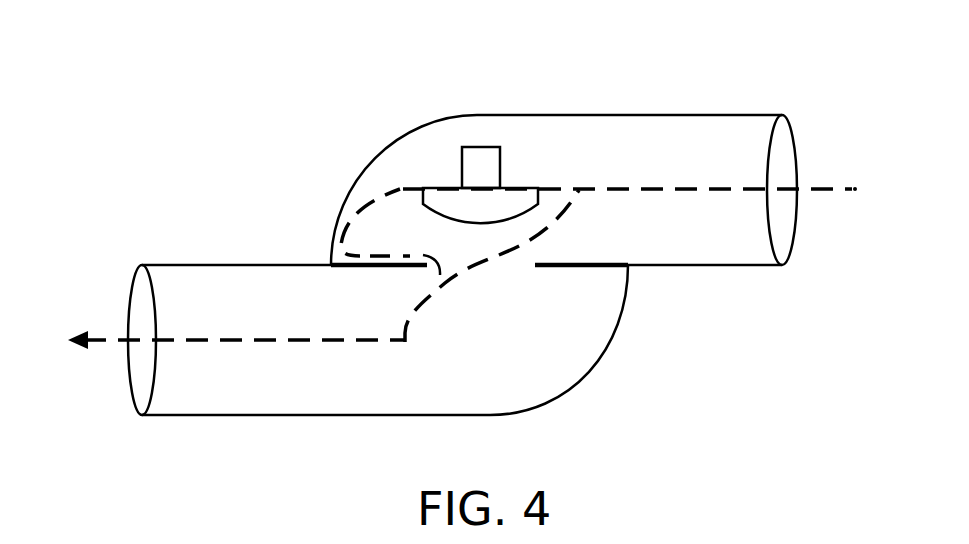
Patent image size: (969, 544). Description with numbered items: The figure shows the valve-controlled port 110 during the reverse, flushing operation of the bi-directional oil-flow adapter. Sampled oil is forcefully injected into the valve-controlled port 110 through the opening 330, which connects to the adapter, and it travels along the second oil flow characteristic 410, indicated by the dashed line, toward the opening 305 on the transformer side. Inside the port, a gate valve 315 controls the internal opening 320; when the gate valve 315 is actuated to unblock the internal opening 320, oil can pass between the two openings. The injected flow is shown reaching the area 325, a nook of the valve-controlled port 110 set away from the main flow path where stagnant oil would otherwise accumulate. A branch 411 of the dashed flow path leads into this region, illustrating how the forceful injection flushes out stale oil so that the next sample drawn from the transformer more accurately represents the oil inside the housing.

The valve-controlled port 110 is at (266, 108).
The opening 305 is at (128, 301).
The opening 330 is at (794, 141).
The gate valve 315 is at (493, 147).
The internal opening 320 is at (507, 288).
The area 325 is at (356, 246).
The second oil flow characteristic 410 is at (190, 340).
The flow path segment 411 is at (395, 255).